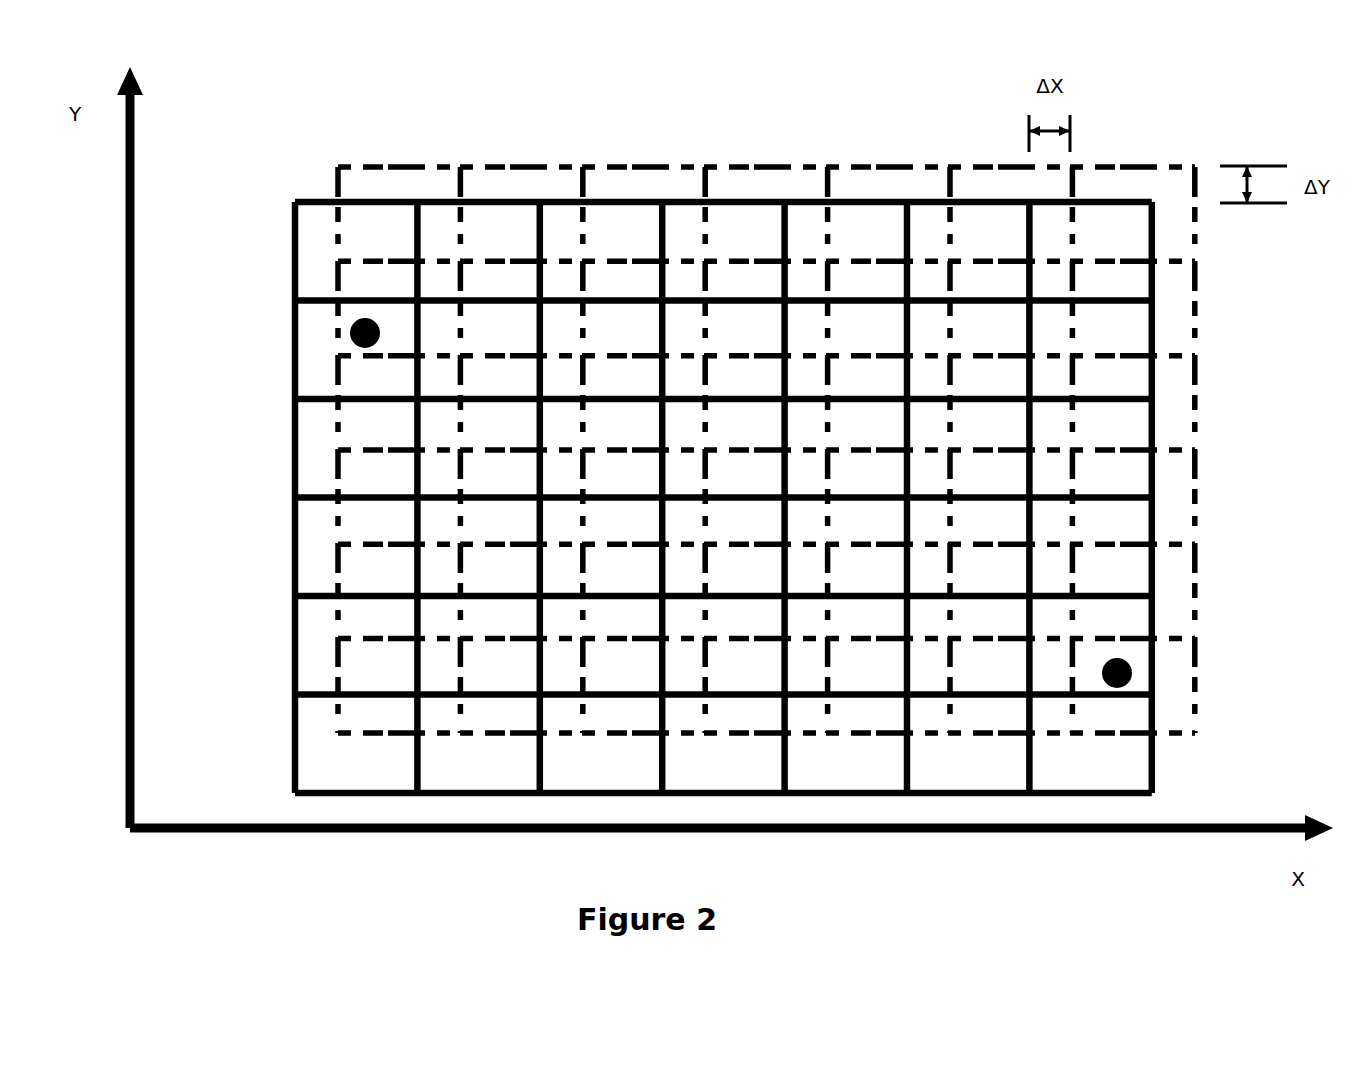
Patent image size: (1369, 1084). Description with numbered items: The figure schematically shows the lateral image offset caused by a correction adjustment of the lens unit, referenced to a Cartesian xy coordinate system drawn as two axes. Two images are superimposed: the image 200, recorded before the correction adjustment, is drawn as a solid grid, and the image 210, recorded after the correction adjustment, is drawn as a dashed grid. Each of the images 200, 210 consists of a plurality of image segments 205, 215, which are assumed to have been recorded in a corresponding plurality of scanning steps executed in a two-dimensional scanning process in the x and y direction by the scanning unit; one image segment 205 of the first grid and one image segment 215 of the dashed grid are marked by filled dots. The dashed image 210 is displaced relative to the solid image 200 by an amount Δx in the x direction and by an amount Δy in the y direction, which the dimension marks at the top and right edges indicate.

The image 200 is at (285, 238).
The image segments 205 is at (358, 329).
The image 210 is at (405, 152).
The image segments 215 is at (1130, 664).